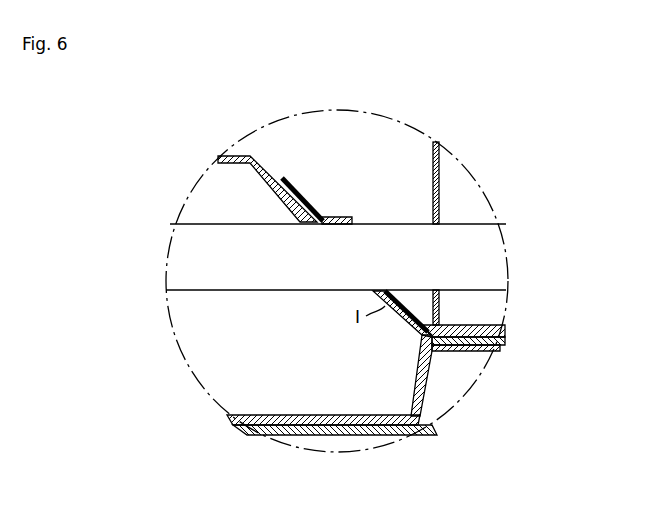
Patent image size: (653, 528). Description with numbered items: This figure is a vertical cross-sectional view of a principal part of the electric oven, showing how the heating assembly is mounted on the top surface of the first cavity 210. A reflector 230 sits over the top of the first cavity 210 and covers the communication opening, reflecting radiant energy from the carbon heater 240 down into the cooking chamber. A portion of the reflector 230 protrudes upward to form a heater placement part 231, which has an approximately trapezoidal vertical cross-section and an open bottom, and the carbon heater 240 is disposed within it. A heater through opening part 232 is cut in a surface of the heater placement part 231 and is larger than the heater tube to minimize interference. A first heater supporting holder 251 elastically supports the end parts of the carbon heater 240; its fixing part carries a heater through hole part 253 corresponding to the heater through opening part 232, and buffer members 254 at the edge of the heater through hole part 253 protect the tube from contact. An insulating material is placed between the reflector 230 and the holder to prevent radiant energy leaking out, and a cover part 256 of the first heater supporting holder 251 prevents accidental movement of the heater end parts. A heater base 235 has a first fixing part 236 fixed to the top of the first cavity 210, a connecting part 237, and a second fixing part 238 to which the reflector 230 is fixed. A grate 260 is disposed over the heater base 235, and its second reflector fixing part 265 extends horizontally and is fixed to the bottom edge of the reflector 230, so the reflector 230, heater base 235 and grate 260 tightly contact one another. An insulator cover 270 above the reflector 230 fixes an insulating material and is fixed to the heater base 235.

The first cavity 210 is at (245, 436).
The reflector 230 is at (319, 204).
The heater placement part 231 is at (270, 180).
The heater through opening part 232 is at (300, 224).
The heater base 235 is at (424, 406).
The first fixing part 236 is at (362, 436).
The connecting part 237 is at (430, 368).
The second fixing part 238 is at (470, 352).
The carbon heater 240 is at (207, 300).
The first heater supporting holder 251 is at (478, 292).
The heater through hole part 253 is at (287, 178).
The buffer member 254 is at (336, 215).
The cover part 256 is at (490, 325).
The grate 260 is at (265, 414).
The second reflector fixing part 265 is at (483, 352).
The insulator cover 270 is at (441, 162).